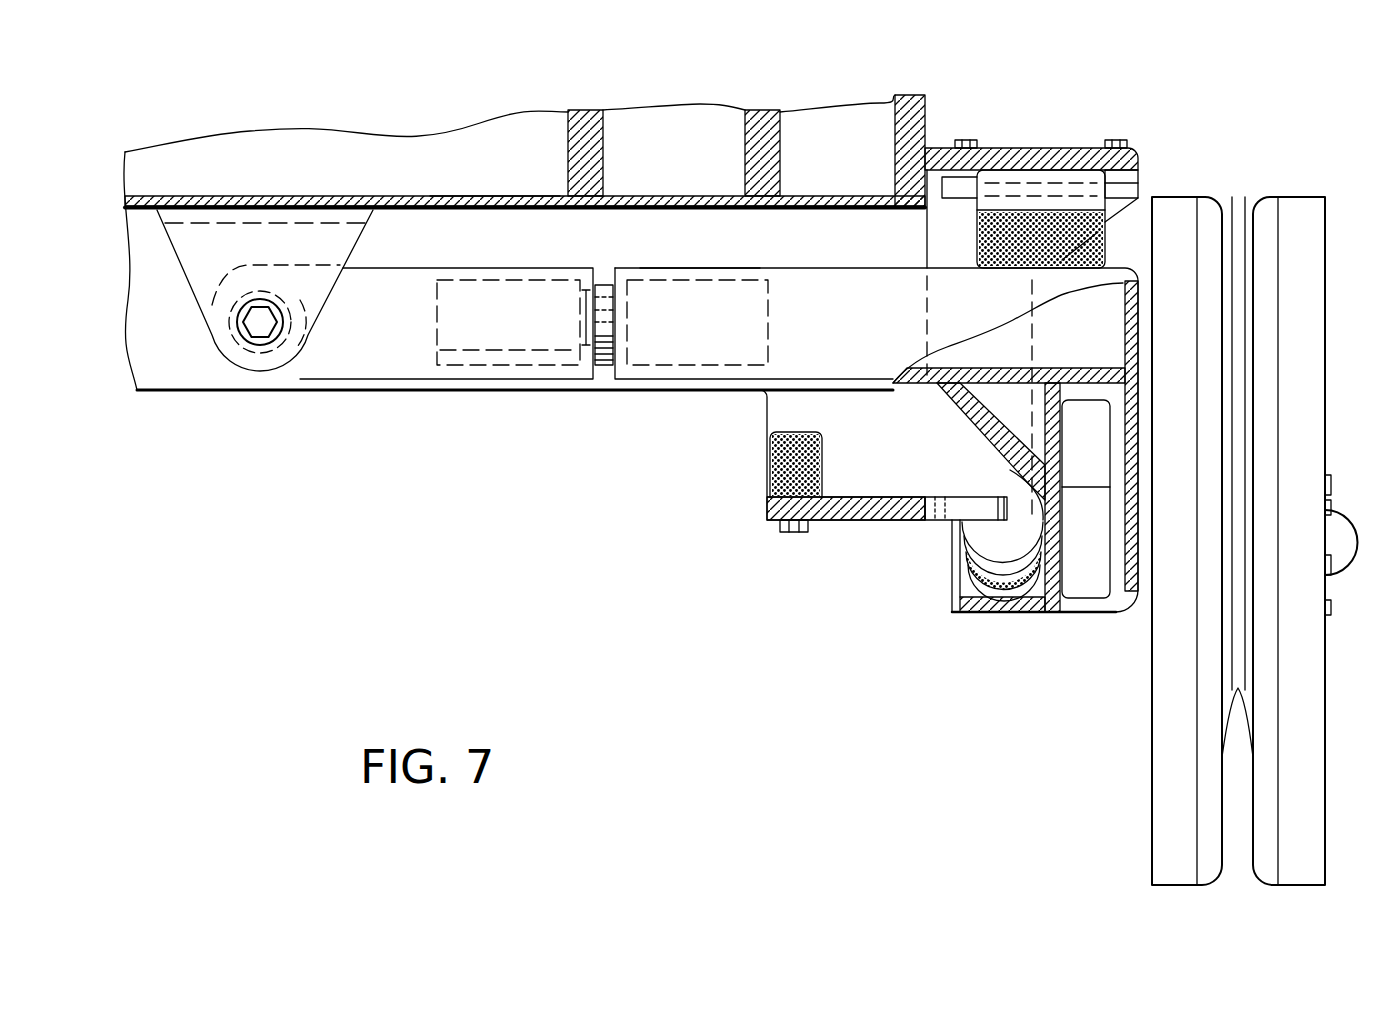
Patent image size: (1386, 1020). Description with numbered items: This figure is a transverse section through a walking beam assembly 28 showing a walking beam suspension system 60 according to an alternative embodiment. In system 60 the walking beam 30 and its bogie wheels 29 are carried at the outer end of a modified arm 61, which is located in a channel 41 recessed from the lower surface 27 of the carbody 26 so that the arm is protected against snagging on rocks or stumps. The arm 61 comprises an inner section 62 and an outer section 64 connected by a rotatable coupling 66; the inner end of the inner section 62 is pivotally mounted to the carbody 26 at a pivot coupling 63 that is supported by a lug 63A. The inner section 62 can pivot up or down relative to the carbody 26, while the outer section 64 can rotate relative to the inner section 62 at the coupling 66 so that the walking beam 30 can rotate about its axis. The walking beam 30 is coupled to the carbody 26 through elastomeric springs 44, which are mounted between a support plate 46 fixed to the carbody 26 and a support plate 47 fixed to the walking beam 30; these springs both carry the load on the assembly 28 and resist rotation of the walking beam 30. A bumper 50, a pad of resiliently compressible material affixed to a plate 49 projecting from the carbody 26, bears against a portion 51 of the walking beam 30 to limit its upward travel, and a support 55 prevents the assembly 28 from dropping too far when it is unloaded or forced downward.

The carbody 26 is at (347, 143).
The lower surface 27 is at (213, 396).
The walking beam assembly 28 is at (1203, 497).
The bogie wheels 29 is at (1162, 760).
The walking beam 30 is at (1083, 614).
The channels 41 is at (500, 214).
The elastomeric springs 44 is at (970, 541).
The support plate 46 is at (954, 473).
The support plate 47 is at (950, 577).
The plate 49 is at (1083, 146).
The bumper 50 is at (1018, 210).
The portion 51 is at (963, 260).
The support 55 is at (780, 457).
The walking beam suspension system 60 is at (446, 544).
The arm 61 is at (712, 256).
The inner section 62 is at (337, 352).
The pivot coupling 63 is at (228, 326).
The lug 63A is at (250, 238).
The outer section 64 is at (977, 331).
The rotatable coupling 66 is at (598, 394).